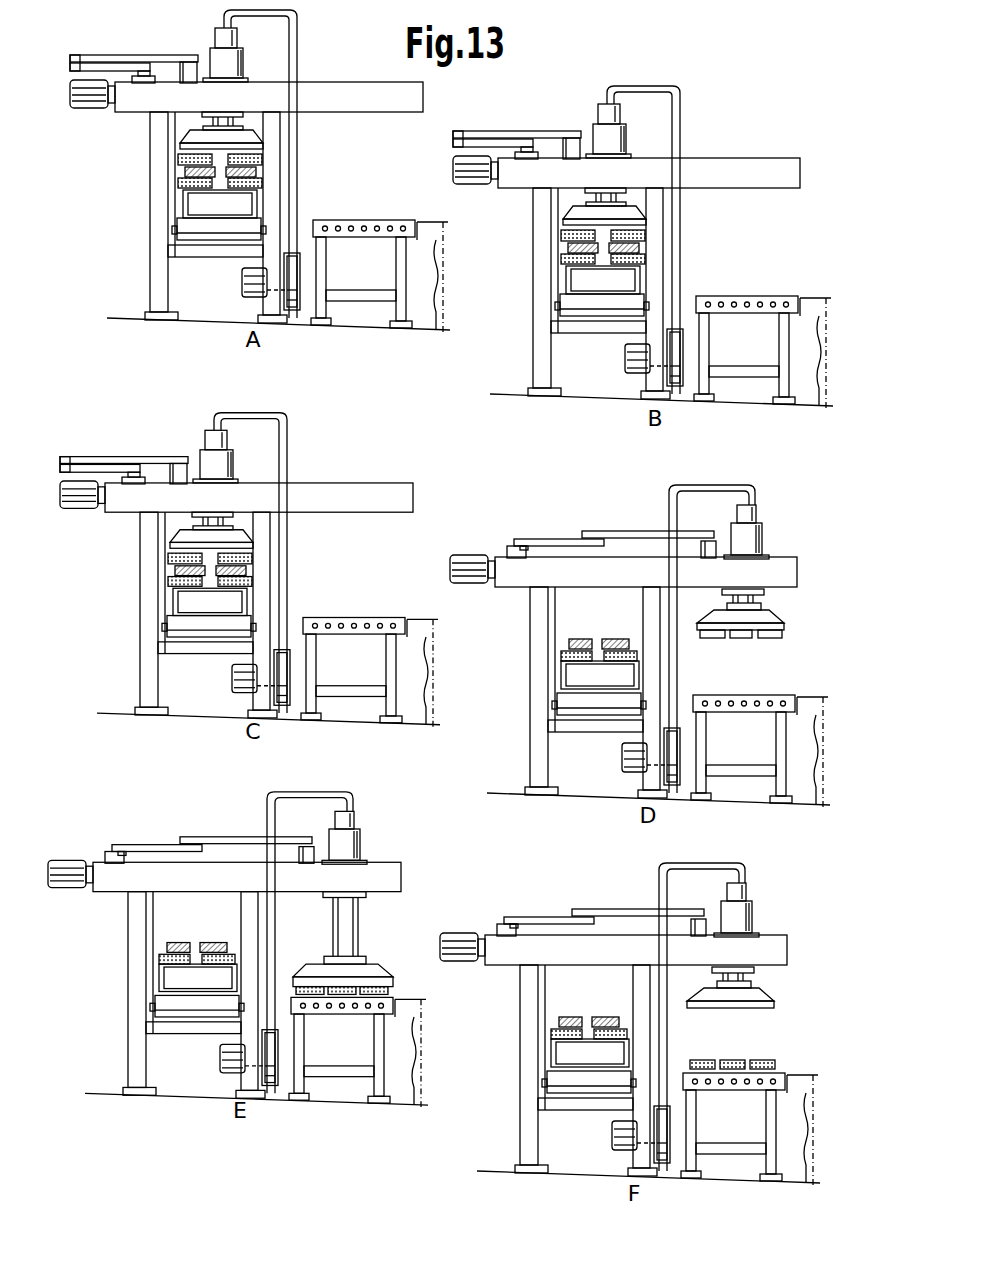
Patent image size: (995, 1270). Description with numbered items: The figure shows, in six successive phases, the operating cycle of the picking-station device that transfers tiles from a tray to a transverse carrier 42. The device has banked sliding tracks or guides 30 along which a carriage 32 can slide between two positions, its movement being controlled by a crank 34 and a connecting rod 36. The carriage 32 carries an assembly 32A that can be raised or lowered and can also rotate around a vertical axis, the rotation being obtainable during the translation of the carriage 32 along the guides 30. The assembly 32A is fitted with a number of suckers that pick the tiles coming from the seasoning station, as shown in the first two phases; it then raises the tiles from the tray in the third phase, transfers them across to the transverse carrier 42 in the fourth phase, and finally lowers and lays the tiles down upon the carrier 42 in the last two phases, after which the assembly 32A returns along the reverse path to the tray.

The banked sliding tracks or guides 30 is at (355, 103).
The carriage 32 is at (208, 47).
The assembly 32A is at (185, 131).
The crank 34 is at (113, 56).
The connecting rod 36 is at (152, 57).
The transverse carrier 42 is at (430, 222).
The mold vessel V is at (178, 199).